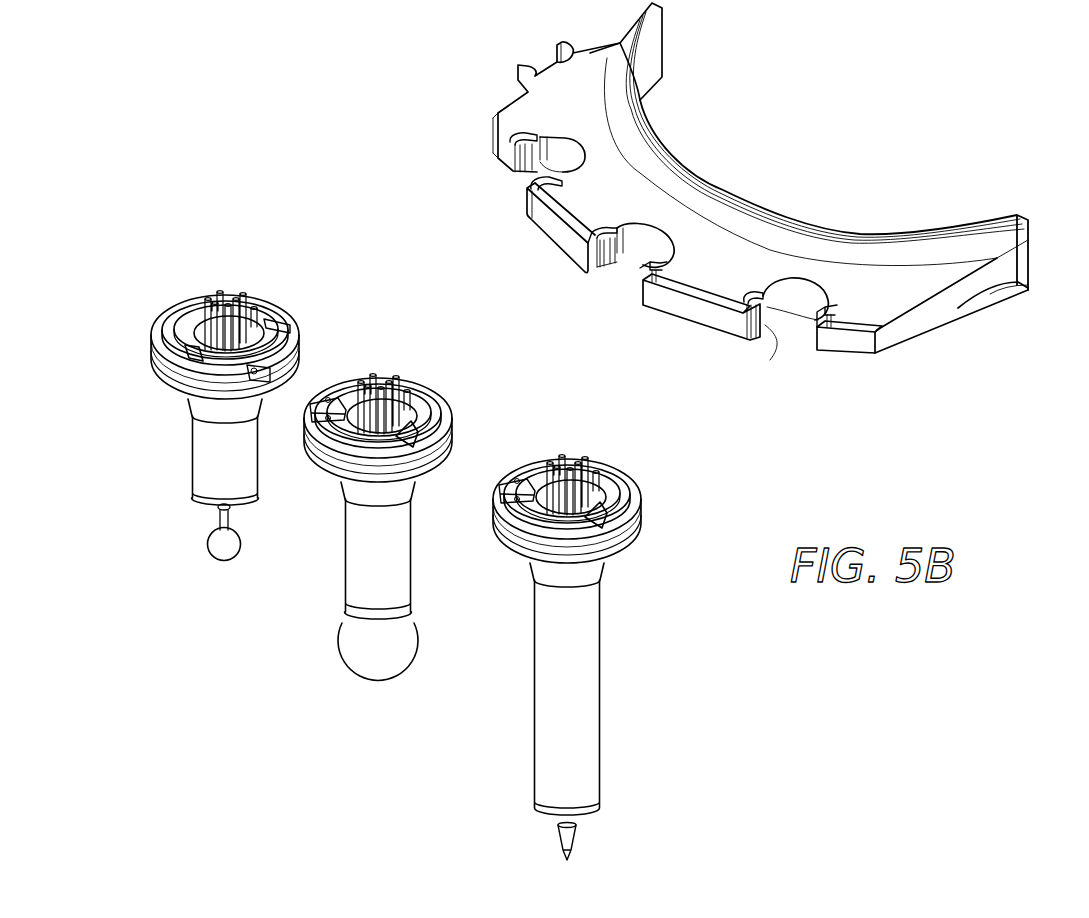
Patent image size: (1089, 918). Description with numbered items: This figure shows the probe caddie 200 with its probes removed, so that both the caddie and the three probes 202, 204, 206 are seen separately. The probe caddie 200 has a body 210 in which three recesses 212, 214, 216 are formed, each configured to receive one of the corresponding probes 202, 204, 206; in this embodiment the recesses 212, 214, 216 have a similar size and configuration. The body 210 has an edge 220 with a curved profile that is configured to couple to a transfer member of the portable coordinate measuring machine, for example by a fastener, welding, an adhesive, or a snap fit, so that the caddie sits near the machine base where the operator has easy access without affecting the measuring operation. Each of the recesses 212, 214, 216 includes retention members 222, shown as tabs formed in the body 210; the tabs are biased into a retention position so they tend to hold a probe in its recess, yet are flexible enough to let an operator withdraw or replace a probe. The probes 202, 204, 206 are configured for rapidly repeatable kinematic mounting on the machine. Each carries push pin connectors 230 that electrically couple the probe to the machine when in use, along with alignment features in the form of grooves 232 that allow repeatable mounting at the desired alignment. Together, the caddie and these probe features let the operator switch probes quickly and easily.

The probe caddie 200 is at (932, 313).
The body 210 is at (932, 280).
The recess 212 is at (578, 157).
The recess 214 is at (660, 240).
The recess 216 is at (807, 290).
The edge 220 is at (667, 148).
The retention members 222 is at (533, 178).
The probe 202 is at (200, 471).
The probe 204 is at (355, 571).
The probe 206 is at (540, 707).
The push pin connectors 230 is at (597, 467).
The grooves 232 is at (160, 353).